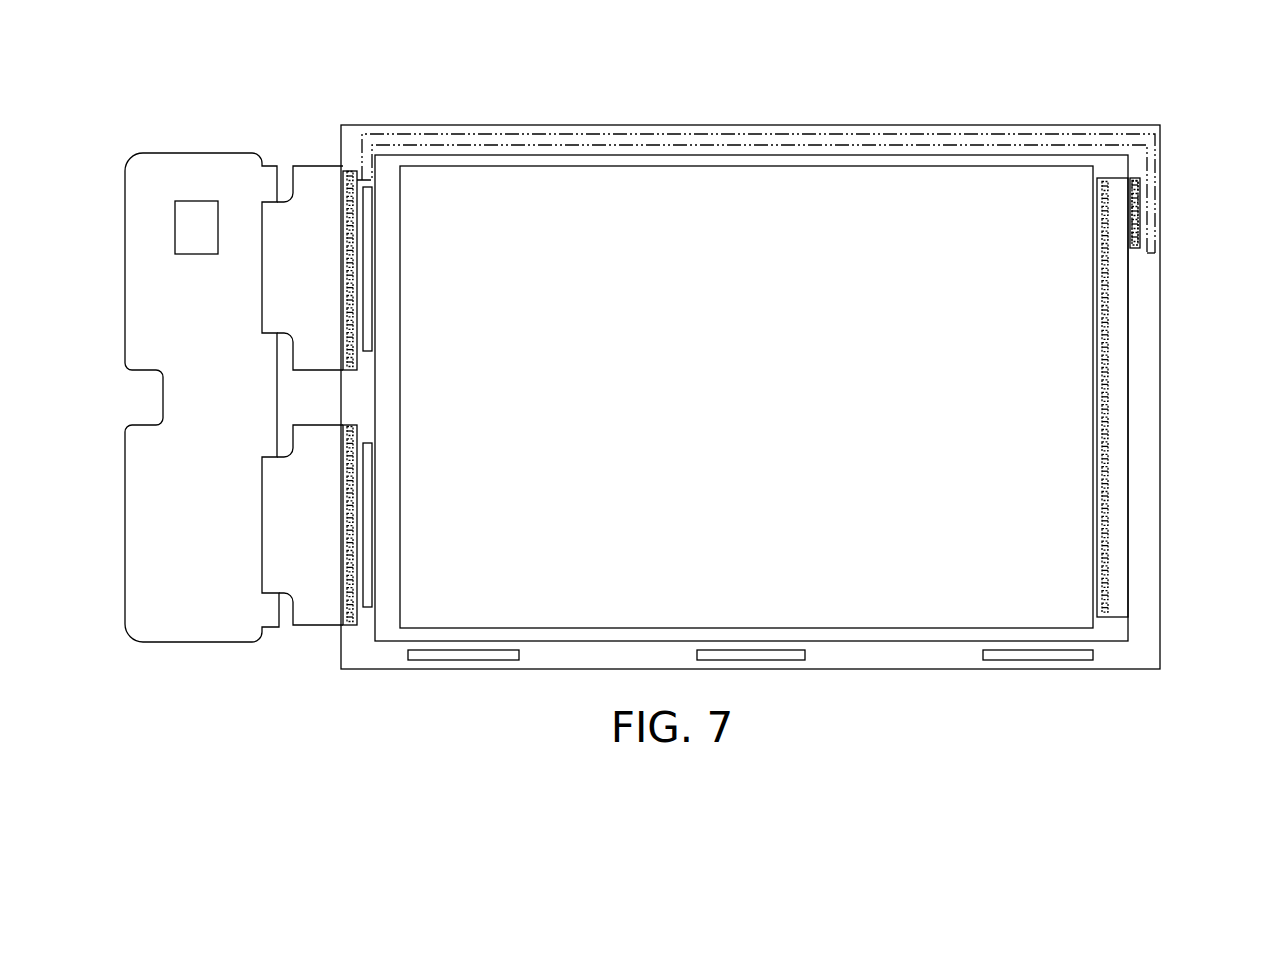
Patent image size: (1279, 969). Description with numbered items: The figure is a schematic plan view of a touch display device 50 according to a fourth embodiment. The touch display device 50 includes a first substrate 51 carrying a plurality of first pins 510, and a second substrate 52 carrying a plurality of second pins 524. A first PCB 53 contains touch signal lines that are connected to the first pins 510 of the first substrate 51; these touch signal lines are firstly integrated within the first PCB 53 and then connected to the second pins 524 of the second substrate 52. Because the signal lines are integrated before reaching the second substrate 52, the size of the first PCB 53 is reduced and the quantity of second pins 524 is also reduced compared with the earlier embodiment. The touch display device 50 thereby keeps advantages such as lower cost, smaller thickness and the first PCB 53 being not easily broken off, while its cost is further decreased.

The touch display device 50 is at (589, 44).
The first substrate 51 is at (878, 164).
The first pins 510 is at (1104, 178).
The second substrate 52 is at (1143, 320).
The first PCB 53 is at (1118, 260).
The second pins 524 is at (1138, 187).